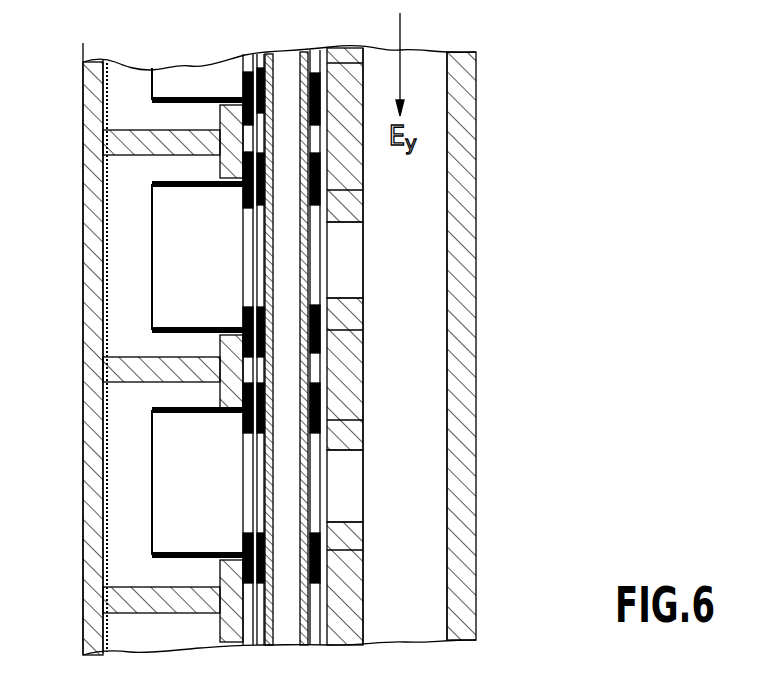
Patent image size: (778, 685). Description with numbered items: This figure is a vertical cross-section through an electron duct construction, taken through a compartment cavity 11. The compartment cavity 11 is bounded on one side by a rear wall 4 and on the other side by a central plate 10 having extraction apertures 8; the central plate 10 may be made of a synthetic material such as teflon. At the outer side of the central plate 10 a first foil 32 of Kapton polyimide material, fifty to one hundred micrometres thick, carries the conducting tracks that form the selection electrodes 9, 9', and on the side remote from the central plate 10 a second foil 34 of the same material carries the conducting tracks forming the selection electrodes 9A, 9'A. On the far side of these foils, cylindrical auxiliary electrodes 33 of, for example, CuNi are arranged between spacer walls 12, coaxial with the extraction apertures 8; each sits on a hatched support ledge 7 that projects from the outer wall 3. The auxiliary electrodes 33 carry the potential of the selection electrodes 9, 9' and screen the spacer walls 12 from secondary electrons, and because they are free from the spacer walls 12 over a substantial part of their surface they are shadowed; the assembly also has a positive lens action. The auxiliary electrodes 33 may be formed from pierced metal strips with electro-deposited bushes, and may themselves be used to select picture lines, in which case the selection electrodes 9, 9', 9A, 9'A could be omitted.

The wall 3 is at (92, 133).
The rear wall 4 is at (458, 572).
The ledge 7 is at (124, 140).
The extraction apertures 8 is at (340, 258).
The selection electrode 9 is at (343, 213).
The selection electrode 9' is at (353, 483).
The selection electrode 9A is at (272, 199).
The selection electrode 9'A is at (274, 457).
The central plate 10 is at (347, 80).
The compartment cavity 11 is at (420, 449).
The spacer wall 12 is at (107, 96).
The first foil 32 is at (306, 640).
The auxiliary electrode 33 is at (186, 97).
The second foil 34 is at (269, 630).